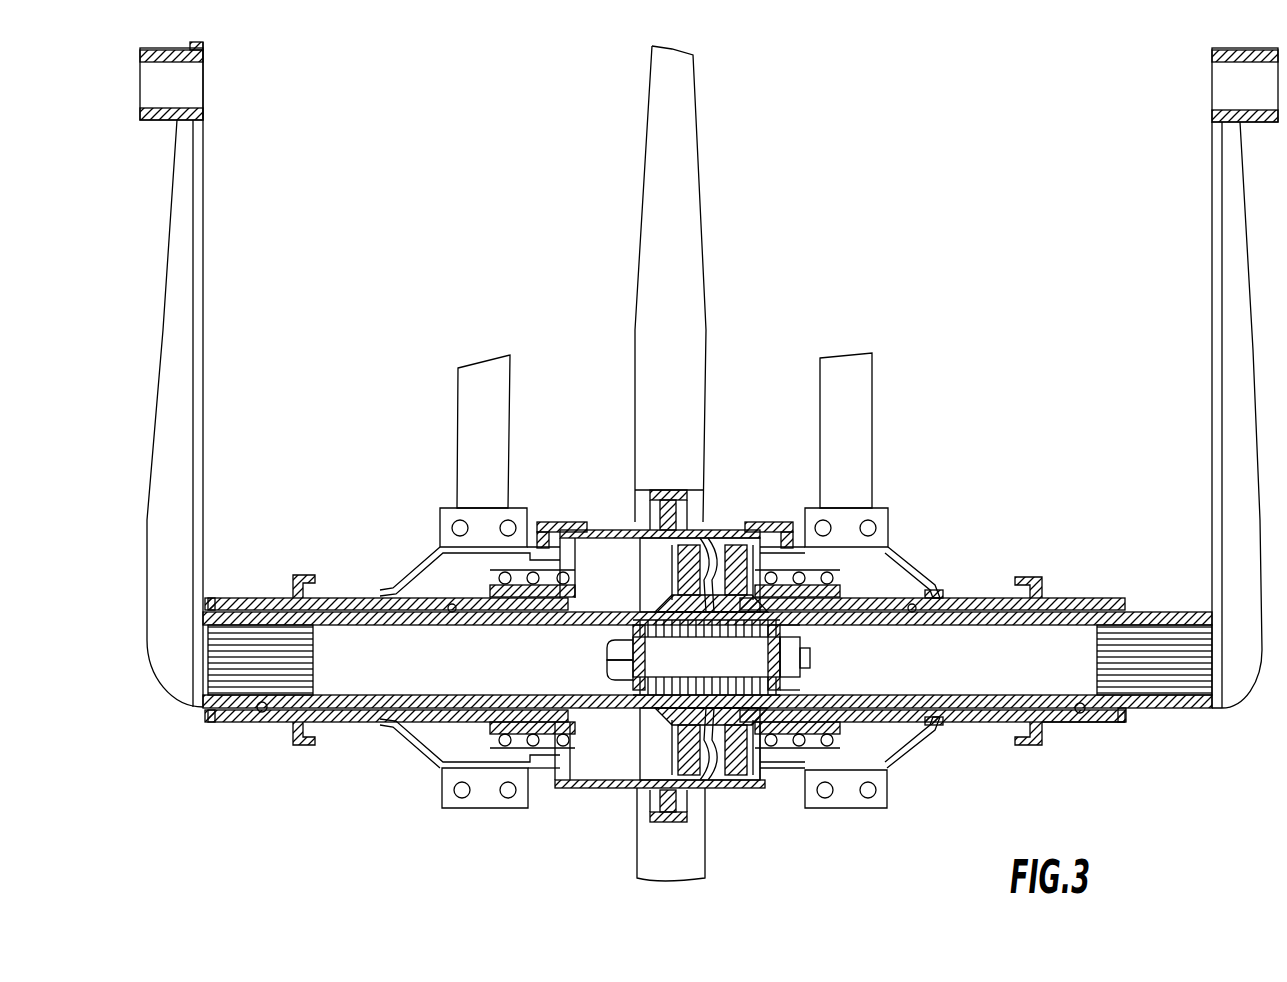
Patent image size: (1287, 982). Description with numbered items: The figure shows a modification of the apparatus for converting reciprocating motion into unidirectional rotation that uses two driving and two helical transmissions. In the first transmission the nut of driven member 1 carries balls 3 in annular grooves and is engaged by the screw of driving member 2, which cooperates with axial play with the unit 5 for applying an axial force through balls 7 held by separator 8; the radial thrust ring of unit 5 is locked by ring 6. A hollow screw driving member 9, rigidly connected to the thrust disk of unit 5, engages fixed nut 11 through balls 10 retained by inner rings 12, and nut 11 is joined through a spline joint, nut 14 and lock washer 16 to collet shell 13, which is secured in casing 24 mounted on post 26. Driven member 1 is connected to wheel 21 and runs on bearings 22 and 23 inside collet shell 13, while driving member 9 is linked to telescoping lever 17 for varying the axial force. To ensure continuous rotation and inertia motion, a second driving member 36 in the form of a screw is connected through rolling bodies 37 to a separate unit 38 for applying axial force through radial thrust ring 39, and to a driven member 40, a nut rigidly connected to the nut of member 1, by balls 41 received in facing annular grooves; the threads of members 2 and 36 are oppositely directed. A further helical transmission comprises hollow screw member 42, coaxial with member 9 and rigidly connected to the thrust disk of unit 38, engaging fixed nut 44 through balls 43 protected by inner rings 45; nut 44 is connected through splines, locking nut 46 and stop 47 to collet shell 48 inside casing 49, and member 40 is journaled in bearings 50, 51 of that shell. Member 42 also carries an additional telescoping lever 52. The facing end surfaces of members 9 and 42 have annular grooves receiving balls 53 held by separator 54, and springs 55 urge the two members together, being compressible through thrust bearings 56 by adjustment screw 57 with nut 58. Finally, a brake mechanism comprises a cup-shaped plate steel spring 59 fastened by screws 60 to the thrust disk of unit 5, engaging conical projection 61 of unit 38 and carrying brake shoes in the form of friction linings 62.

The driven member 1 is at (735, 500).
The driving member 2 is at (900, 572).
The balls 3 is at (835, 790).
The unit for applying an axial force 5 is at (740, 536).
The ring 6 is at (810, 632).
The balls 7 is at (828, 702).
The separator 8 is at (665, 716).
The driving member 9 is at (1080, 612).
The balls 10 is at (1077, 703).
The fixed nut 11 is at (1068, 722).
The inner rings 12 is at (1120, 722).
The collet shell 13 is at (932, 584).
The nut 14 is at (1035, 745).
The lock washer 16 is at (1028, 577).
The telescoping lever 17 is at (1228, 312).
The wheel 21 is at (688, 233).
The bearing 22 is at (775, 522).
The bearing 23 is at (815, 556).
The casing 24 is at (880, 520).
The post 26 is at (875, 388).
The driving member 36 is at (660, 612).
The rolling bodies 37 is at (672, 600).
The unit for applying axial force 38 is at (670, 745).
The radial thrust ring 39 is at (658, 690).
The driven member 40 is at (598, 530).
The rolling bodies 41 is at (568, 750).
The driving member 42 is at (215, 598).
The balls 43 is at (452, 612).
The fixed nut 44 is at (258, 604).
The inner rings 45 is at (215, 722).
The locking nut 46 is at (293, 735).
The stop 47 is at (306, 575).
The collet shell 48 is at (405, 760).
The casing 49 is at (445, 510).
The bearing 50 is at (490, 572).
The bearing 51 is at (548, 522).
The telescoping lever 52 is at (205, 245).
The balls 53 is at (713, 536).
The separator 54 is at (700, 690).
The springs 55 is at (752, 690).
The thrust bearings 56 is at (607, 672).
The adjustment screw 57 is at (607, 648).
The nut 58 is at (800, 650).
The cup-shaped plate steel spring 59 is at (725, 795).
The screws 60 is at (740, 790).
The conical projection 61 is at (710, 792).
The friction linings 62 is at (682, 492).